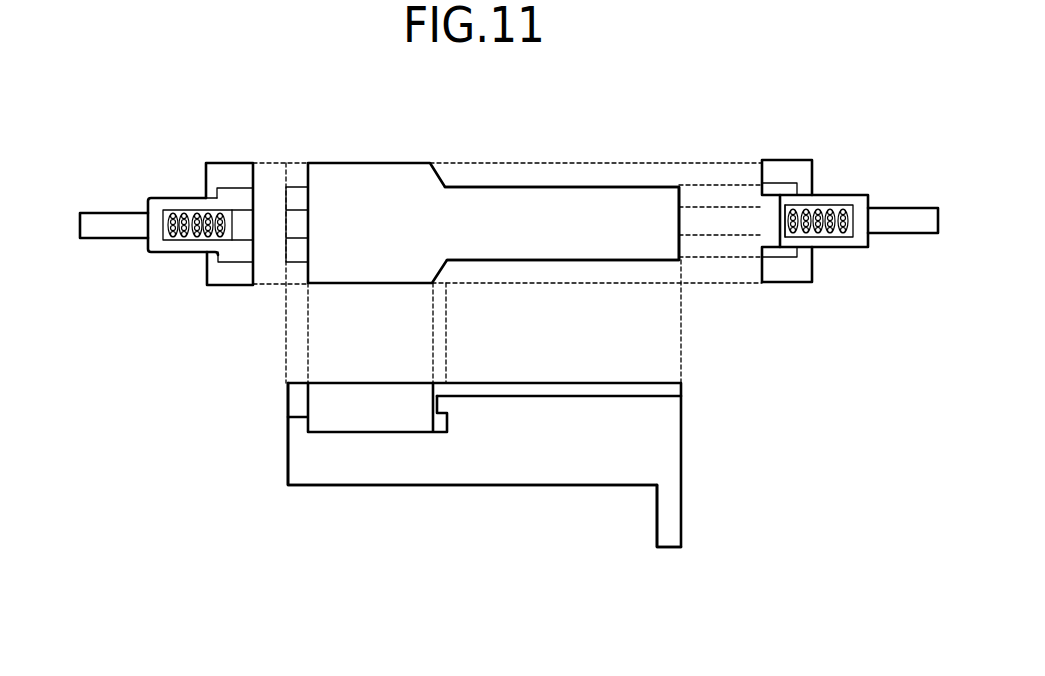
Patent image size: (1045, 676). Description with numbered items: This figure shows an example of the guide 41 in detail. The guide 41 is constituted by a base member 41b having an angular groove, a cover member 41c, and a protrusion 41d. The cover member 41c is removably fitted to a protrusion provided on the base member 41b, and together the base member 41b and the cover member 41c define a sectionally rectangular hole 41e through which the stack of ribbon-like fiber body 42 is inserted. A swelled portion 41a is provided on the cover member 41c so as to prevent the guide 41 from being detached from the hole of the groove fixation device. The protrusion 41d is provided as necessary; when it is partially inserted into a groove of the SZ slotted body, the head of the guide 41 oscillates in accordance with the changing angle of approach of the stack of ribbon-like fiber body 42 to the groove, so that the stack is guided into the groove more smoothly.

The guide 41 is at (522, 187).
The swelled portion 41a is at (372, 275).
The base member 41b is at (155, 243).
The cover member 41c is at (230, 178).
The protrusion 41d is at (105, 238).
The sectionally rectangular hole 41e is at (780, 218).
The stack of ribbon-like fiber body 42 is at (220, 240).